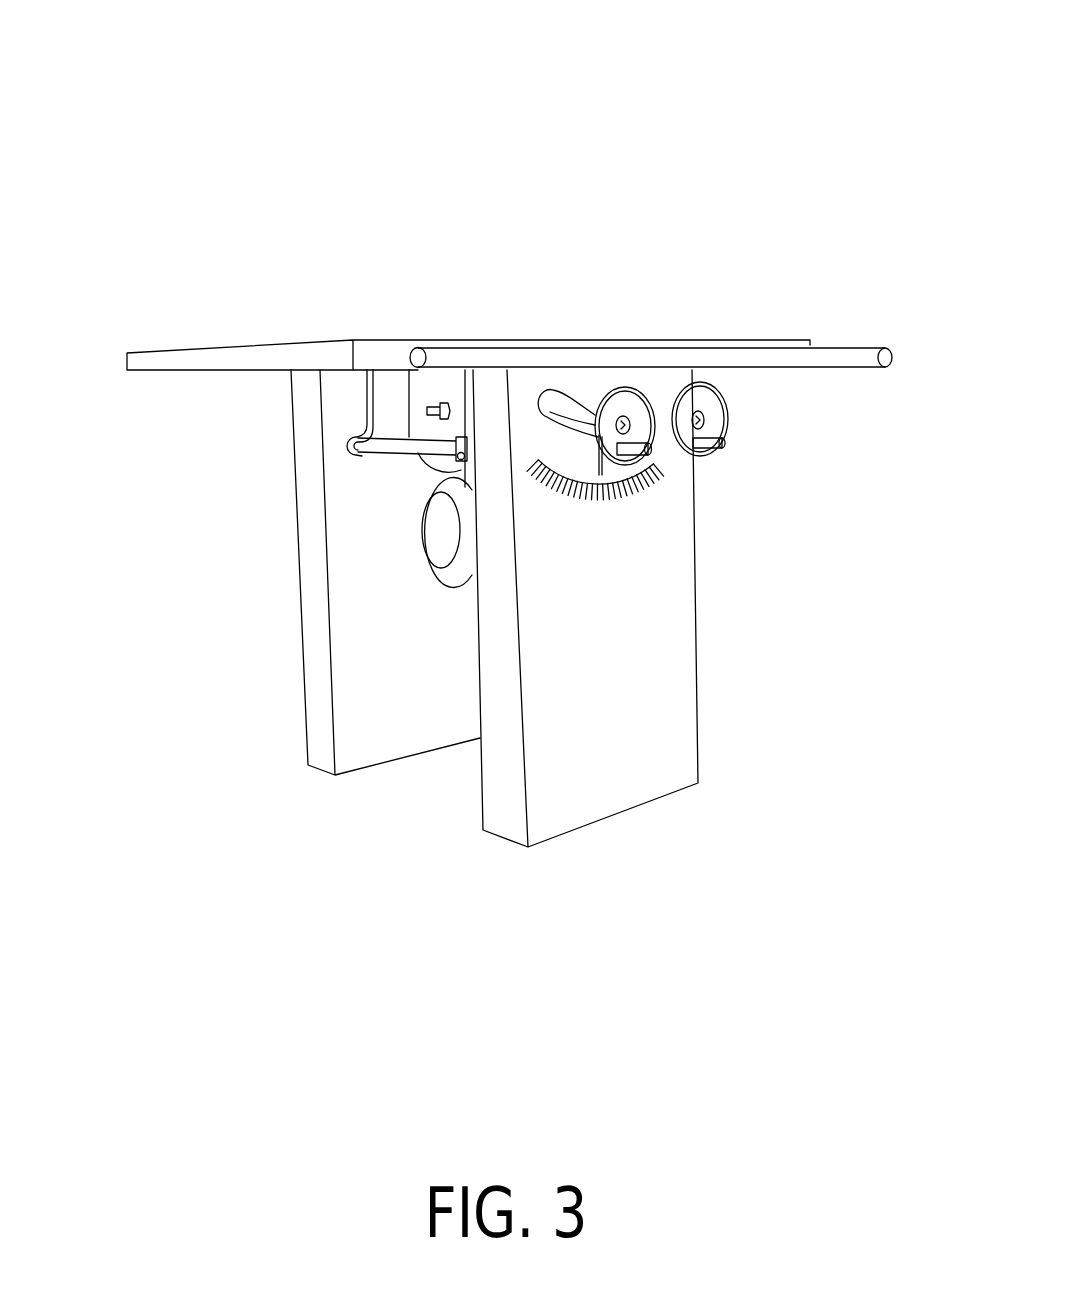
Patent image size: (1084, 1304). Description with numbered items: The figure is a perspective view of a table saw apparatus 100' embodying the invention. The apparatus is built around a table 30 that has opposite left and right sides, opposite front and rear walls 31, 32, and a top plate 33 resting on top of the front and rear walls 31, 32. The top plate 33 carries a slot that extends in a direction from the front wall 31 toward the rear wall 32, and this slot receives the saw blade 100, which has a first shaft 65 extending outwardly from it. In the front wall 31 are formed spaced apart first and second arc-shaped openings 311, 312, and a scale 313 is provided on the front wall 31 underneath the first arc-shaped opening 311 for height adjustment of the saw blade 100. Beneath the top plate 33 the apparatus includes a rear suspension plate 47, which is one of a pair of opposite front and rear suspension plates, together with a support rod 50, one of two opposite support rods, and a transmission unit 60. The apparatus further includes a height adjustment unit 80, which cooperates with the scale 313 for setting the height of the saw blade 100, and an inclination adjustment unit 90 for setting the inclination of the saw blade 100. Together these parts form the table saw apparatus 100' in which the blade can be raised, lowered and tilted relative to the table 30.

The table saw apparatus 100' is at (826, 75).
The saw blade 100 is at (627, 330).
The table 30 is at (290, 546).
The front wall 31 is at (610, 795).
The rear wall 32 is at (307, 687).
The top plate 33 is at (160, 363).
The rear suspension plate 47 is at (378, 400).
The support rod 50 is at (370, 459).
The transmission unit 60 is at (424, 587).
The first shaft 65 is at (440, 403).
The height adjustment unit 80 is at (620, 477).
The inclination adjustment unit 90 is at (735, 425).
The first arc-shaped opening 311 is at (562, 403).
The second arc-shaped opening 312 is at (668, 400).
The scale 313 is at (657, 483).